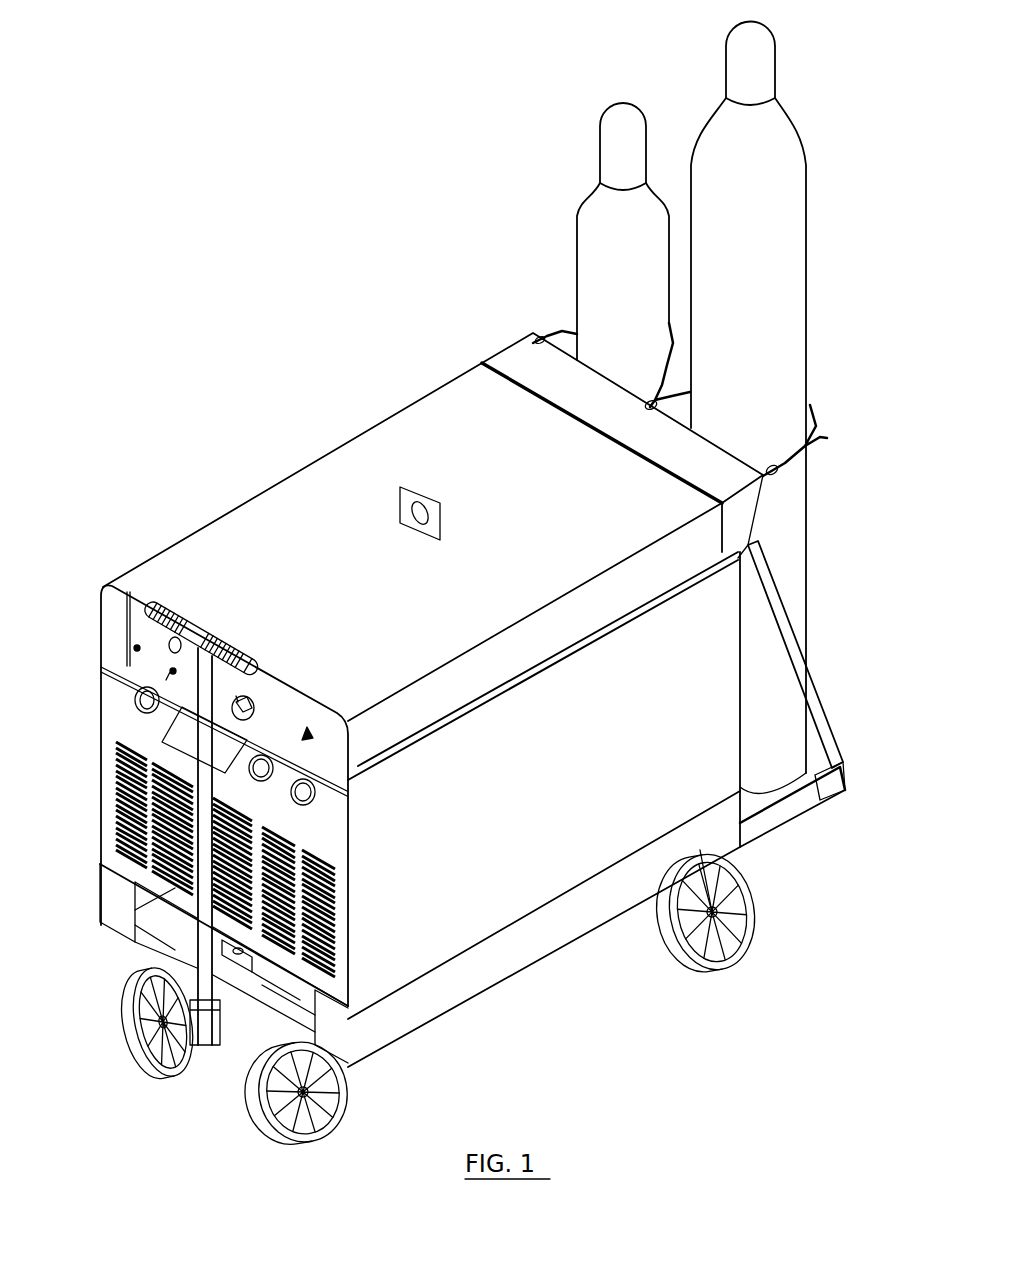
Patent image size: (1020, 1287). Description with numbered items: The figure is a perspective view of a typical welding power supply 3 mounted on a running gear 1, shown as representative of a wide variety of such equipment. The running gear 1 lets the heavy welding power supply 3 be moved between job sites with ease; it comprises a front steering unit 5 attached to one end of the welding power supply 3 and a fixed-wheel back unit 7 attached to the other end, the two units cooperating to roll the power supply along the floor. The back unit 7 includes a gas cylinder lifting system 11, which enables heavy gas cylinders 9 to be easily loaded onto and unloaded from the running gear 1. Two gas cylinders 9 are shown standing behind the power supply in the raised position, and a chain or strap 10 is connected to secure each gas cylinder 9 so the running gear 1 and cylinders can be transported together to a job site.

The running gear 1 is at (203, 727).
The welding power supply 3 is at (214, 552).
The front steering unit 5 is at (128, 1008).
The fixed-wheel back unit 7 is at (790, 805).
The gas cylinder 9 is at (597, 243).
The chain or strap 10 is at (827, 438).
The gas cylinder lifting system 11 is at (812, 720).